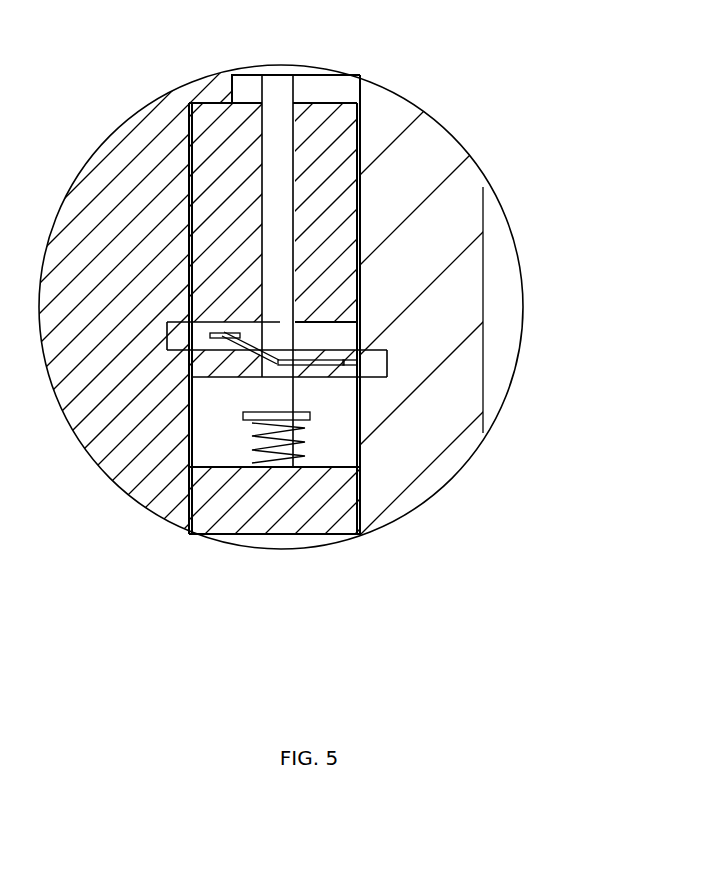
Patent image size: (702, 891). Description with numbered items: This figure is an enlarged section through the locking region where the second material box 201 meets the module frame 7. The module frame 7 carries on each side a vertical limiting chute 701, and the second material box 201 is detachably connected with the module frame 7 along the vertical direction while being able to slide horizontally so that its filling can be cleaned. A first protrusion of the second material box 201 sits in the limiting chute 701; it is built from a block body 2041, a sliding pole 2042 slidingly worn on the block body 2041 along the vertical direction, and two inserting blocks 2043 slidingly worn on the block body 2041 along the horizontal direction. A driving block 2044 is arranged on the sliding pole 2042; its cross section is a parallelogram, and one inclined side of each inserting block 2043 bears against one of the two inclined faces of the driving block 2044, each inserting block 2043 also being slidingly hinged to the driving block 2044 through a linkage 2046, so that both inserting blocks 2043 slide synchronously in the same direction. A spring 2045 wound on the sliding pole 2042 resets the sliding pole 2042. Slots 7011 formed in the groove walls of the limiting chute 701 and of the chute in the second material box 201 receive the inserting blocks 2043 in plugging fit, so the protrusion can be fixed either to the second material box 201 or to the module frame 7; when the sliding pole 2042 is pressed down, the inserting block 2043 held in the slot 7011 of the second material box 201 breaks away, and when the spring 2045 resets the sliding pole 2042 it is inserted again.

The module frame 7 is at (458, 180).
The limiting chute 701 is at (313, 82).
The slot 7011 is at (375, 358).
The second material box 201 is at (168, 115).
The block body 2041 is at (360, 110).
The sliding pole 2042 is at (278, 85).
The inserting block 2043 is at (222, 342).
The driving block 2044 is at (262, 377).
The spring 2045 is at (297, 377).
The linkage 2046 is at (333, 372).